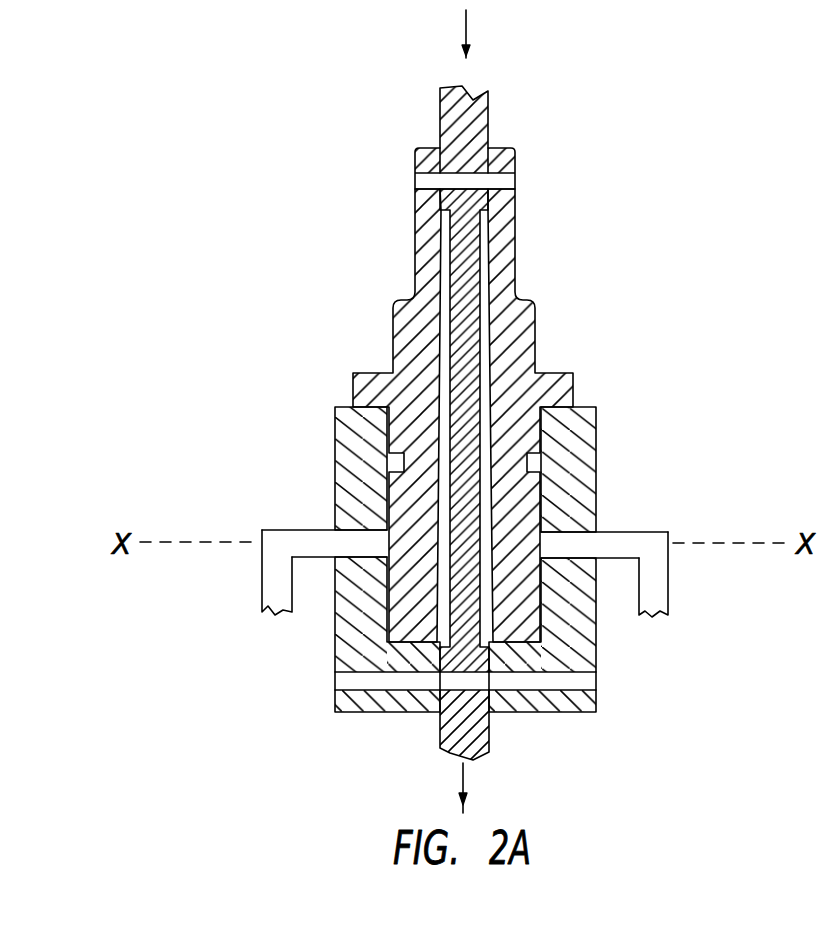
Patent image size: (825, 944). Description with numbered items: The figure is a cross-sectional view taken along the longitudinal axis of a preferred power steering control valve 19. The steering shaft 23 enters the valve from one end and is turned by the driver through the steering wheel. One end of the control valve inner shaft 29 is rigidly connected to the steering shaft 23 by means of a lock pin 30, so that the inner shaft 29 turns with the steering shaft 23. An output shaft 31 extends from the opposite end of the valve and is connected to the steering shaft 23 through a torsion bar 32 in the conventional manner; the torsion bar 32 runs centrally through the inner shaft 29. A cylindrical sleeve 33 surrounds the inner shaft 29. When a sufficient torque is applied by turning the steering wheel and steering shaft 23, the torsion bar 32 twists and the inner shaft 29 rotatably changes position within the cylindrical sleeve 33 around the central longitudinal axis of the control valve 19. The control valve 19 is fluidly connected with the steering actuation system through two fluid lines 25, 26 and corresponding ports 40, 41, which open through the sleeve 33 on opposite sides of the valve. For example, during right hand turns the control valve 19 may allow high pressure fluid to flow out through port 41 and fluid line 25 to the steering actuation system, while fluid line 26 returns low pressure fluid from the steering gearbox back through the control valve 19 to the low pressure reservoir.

The power steering control valve 19 is at (367, 199).
The steering shaft 23 is at (500, 119).
The fluid line 25 is at (657, 593).
The fluid line 26 is at (278, 588).
The control valve inner shaft 29 is at (517, 348).
The lock pin 30 is at (525, 182).
The output shaft 31 is at (500, 742).
The torsion bar 32 is at (470, 296).
The cylindrical sleeve 33 is at (602, 418).
The port 40 is at (340, 548).
The port 41 is at (638, 508).